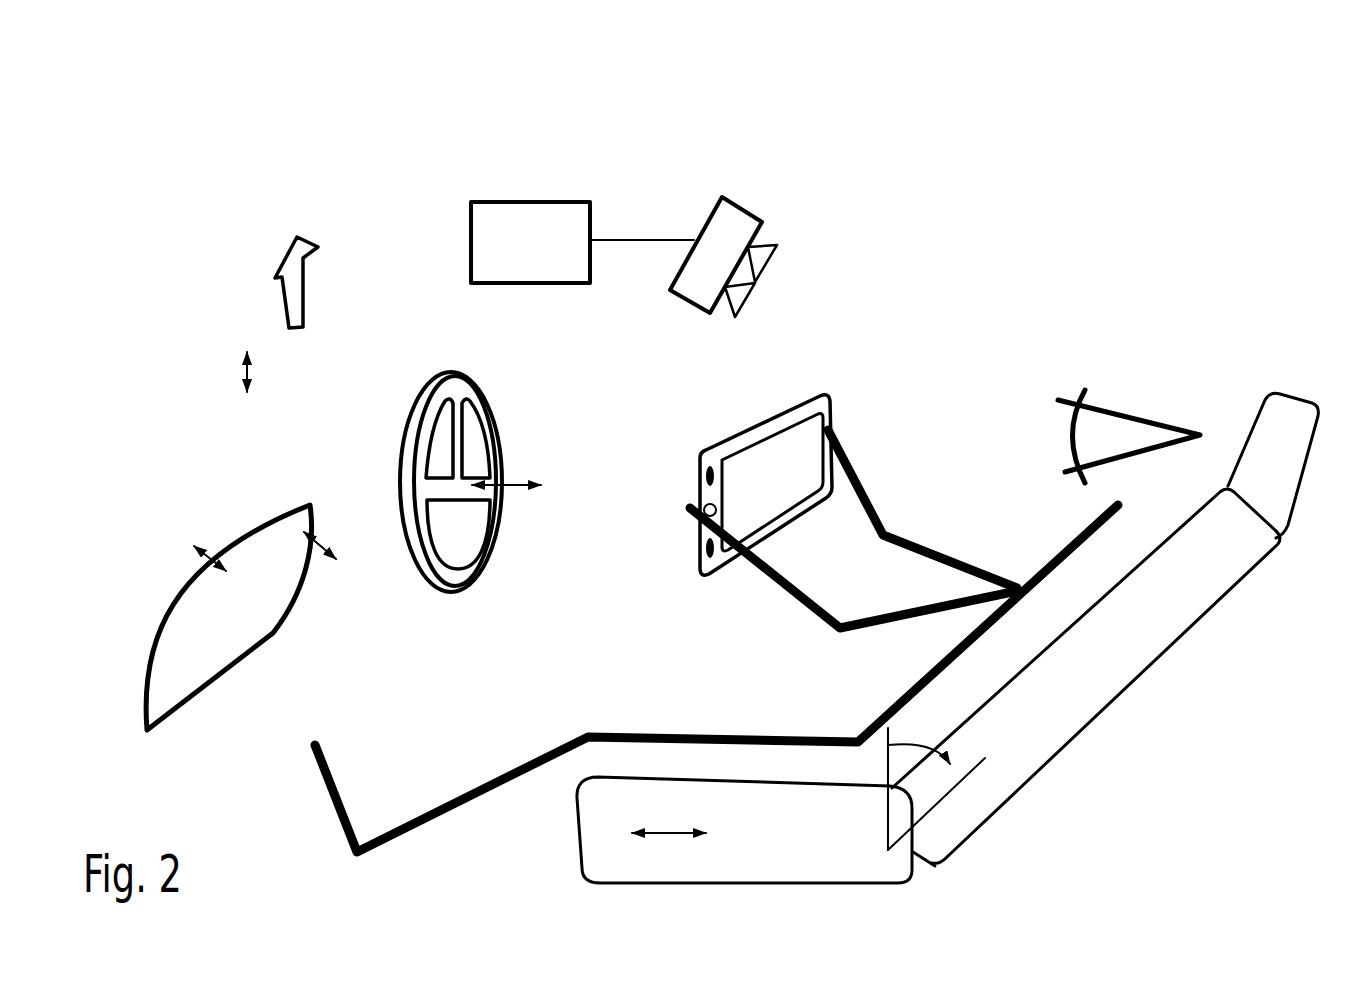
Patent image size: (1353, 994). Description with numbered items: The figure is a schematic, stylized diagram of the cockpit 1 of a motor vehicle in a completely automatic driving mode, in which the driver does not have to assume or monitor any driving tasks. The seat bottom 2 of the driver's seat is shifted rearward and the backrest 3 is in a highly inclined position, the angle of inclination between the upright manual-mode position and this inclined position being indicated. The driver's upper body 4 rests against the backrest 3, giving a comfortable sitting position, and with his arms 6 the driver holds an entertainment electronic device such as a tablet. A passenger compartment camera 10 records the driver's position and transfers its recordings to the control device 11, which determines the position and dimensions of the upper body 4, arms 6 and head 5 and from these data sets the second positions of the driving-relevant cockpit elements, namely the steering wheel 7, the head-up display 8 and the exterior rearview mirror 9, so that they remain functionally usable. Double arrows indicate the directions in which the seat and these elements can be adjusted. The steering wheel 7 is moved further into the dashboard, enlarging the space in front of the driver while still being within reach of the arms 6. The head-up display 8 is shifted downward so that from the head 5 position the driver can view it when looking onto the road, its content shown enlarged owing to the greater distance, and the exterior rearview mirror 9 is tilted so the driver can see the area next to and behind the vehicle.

The cockpit 1 is at (408, 112).
The seat bottom 2 is at (778, 867).
The backrest 3 is at (1043, 748).
The upper body 4 is at (1067, 545).
The head 5 is at (1110, 394).
The arms 6 is at (906, 538).
The steering wheel 7 is at (455, 388).
The head-up display 8 is at (232, 290).
The exterior rearview mirror 9 is at (255, 615).
The passenger compartment camera 10 is at (731, 218).
The control device 11 is at (490, 240).